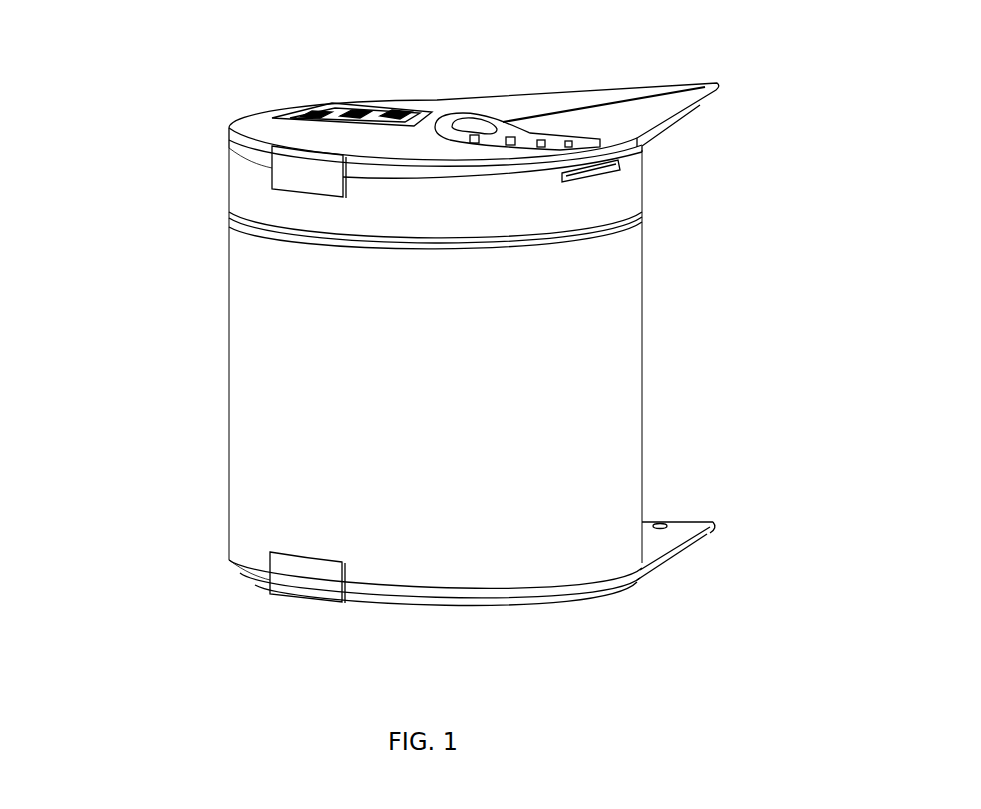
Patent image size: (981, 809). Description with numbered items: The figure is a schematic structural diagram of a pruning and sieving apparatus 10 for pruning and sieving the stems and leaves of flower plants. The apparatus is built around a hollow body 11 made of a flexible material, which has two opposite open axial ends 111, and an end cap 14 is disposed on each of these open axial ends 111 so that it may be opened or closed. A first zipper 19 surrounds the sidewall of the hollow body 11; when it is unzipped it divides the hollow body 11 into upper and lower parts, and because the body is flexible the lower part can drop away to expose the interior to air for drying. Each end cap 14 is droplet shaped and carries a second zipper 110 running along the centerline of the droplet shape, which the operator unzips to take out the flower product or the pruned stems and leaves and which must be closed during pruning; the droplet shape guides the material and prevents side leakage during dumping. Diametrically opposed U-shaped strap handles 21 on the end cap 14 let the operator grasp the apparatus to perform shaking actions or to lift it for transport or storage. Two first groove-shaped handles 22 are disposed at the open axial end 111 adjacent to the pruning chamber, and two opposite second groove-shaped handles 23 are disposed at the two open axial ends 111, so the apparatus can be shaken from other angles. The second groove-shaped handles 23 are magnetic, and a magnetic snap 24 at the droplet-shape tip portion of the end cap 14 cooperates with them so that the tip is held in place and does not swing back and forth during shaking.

The pruning and sieving apparatus 10 is at (163, 96).
The hollow body 11 is at (229, 346).
The end cap 14 is at (487, 103).
The first zipper 19 is at (228, 221).
The U-shaped strap handle 21 is at (403, 108).
The first groove-shaped handle 22 is at (610, 173).
The second groove-shaped handle 23 is at (290, 174).
The magnetic snap 24 is at (663, 523).
The second zipper 110 is at (563, 110).
The open axial end 111 is at (228, 148).